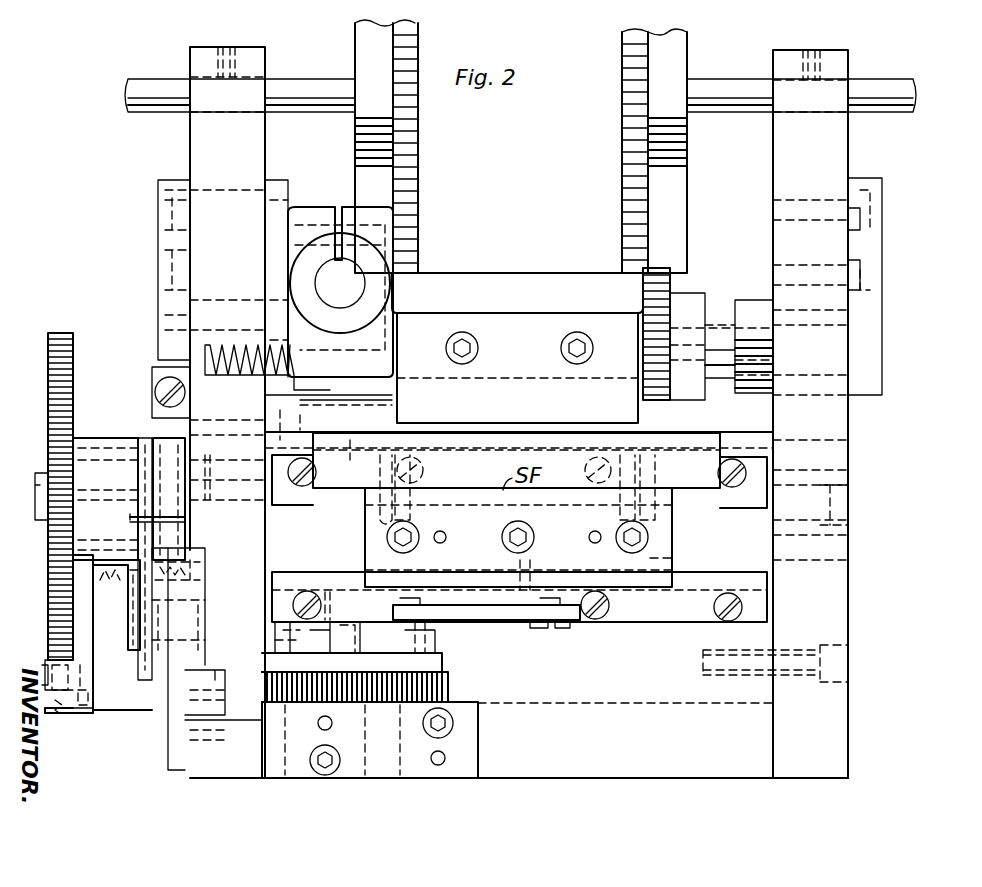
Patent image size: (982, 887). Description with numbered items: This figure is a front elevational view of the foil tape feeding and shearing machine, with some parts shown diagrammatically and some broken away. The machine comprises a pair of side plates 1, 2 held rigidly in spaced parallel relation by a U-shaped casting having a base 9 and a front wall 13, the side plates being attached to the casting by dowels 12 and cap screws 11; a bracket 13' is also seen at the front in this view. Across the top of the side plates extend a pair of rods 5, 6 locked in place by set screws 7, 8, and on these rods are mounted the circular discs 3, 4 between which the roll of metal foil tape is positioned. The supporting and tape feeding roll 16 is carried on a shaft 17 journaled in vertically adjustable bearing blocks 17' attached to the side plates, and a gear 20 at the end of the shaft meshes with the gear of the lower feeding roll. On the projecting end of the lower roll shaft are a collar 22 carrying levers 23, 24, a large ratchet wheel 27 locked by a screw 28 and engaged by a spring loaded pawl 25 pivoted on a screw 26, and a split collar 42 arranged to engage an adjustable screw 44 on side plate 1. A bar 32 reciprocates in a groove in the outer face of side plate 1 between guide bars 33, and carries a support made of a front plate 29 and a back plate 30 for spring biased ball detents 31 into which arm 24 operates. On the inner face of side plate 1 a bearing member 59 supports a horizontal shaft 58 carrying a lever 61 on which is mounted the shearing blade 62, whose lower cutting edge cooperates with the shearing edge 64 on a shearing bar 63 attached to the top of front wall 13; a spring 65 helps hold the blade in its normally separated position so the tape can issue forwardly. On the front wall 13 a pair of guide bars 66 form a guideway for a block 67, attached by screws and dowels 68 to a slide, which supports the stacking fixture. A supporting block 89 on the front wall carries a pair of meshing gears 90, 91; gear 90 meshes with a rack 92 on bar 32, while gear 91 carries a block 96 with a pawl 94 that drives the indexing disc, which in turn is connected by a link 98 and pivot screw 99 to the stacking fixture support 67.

The side plate 1 is at (200, 148).
The side plate 2 is at (853, 180).
The circular disc 3 is at (412, 136).
The circular disc 4 is at (630, 140).
The rod 5 is at (325, 80).
The rod 6 is at (757, 80).
The set screw 7 is at (235, 60).
The set screw 8 is at (812, 60).
The base 9 is at (596, 705).
The cap screw 11 is at (222, 498).
The dowel 12 is at (300, 555).
The front wall 13 is at (612, 654).
The bracket 13' is at (544, 490).
The supporting and tape feeding roll 16 is at (525, 290).
The shaft 17 is at (721, 334).
The adjustable bearing block 17' is at (142, 270).
The gear 20 is at (670, 270).
The collar 22 is at (118, 438).
The lever 23 is at (82, 607).
The lever 24 is at (148, 440).
The spring loaded pawl 25 is at (60, 658).
The screw 26 is at (42, 675).
The ratchet wheel 27 is at (48, 360).
The screw 28 is at (43, 478).
The front plate 29 is at (105, 710).
The back plate 30 is at (175, 612).
The spring biased ball detent 31 is at (122, 598).
The bar 32 is at (190, 637).
The bar 33 is at (178, 505).
The split collar 42 is at (172, 450).
The adjustable screw 44 is at (165, 385).
The horizontal shaft 58 is at (357, 296).
The bearing member 59 is at (275, 230).
The lever 61 is at (313, 213).
The shearing blade 62 is at (535, 362).
The shearing bar 63 is at (345, 400).
The shearing edge 64 is at (548, 440).
The spring 65 is at (285, 352).
The guide bar 66 is at (710, 575).
The block 67 is at (665, 536).
The screws and dowels 68 is at (502, 537).
The supporting block 89 is at (470, 752).
The gear 90 is at (300, 706).
The gear 91 is at (448, 690).
The rack 92 is at (228, 700).
The pawl 94 is at (333, 650).
The block 96 is at (442, 665).
The link 98 is at (505, 632).
The pivot screw 99 is at (572, 630).